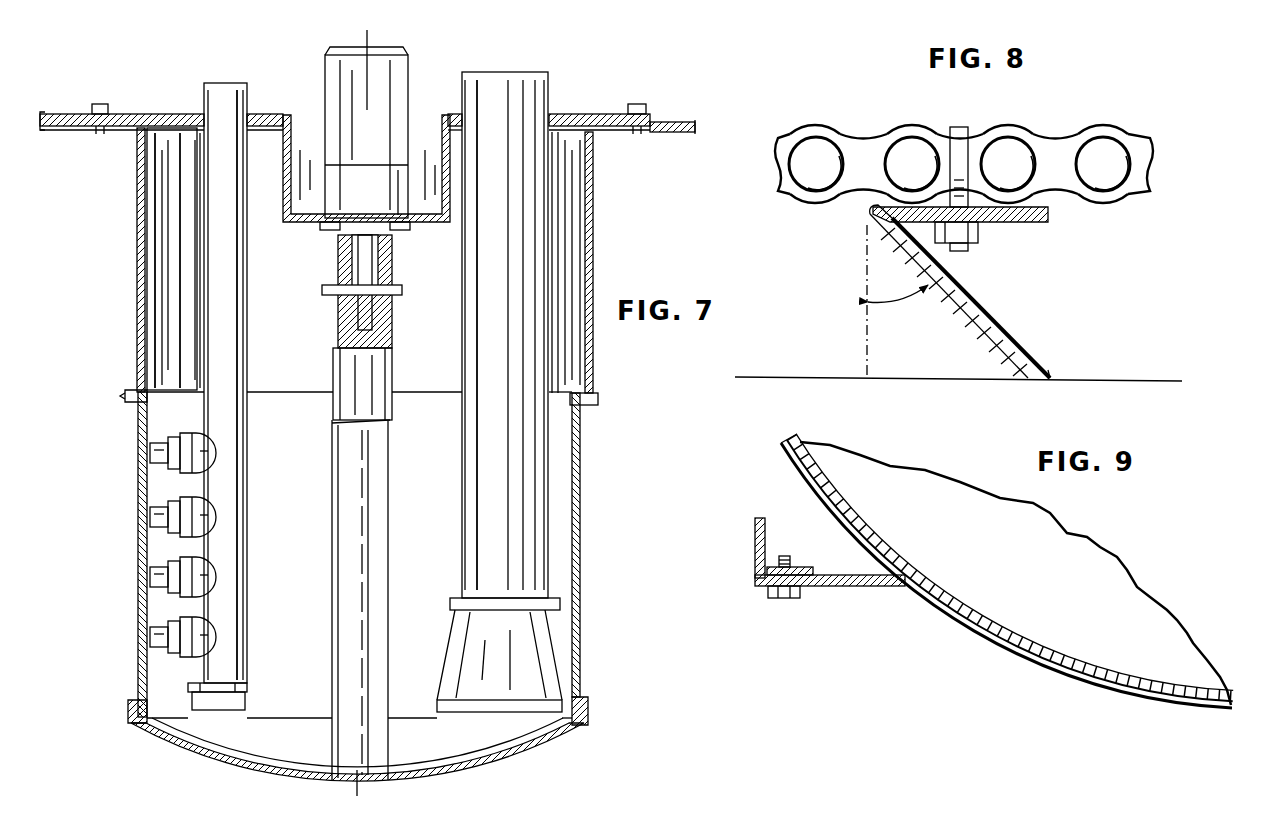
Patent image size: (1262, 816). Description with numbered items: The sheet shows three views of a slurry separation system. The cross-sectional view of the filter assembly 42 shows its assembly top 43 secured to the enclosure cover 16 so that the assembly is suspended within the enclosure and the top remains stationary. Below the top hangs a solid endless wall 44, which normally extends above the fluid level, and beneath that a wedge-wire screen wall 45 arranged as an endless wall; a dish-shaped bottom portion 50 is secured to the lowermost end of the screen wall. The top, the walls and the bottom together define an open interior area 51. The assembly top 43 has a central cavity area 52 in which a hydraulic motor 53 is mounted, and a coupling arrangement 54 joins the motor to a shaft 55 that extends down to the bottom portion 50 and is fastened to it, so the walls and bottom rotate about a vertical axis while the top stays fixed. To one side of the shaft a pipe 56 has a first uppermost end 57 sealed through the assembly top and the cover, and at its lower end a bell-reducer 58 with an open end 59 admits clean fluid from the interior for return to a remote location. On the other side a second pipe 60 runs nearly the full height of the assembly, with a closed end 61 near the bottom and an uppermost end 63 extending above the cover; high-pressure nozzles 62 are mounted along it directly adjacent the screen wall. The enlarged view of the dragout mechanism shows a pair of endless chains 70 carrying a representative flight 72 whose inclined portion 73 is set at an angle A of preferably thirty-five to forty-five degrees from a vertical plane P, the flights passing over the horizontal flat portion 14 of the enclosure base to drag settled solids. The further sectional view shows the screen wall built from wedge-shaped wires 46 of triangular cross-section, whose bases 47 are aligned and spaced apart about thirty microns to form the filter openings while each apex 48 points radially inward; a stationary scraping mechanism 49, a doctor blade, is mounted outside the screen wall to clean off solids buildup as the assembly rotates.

In FIG. 8, the horizontal flat portion 14 is at (766, 380).
In FIG. 7, the cover 16 is at (680, 122).
In FIG. 7, the filter assembly 42 is at (134, 318).
In FIG. 9, the filter assembly 42 is at (1088, 566).
In FIG. 7, the assembly top 43 is at (597, 113).
In FIG. 7, the solid endless wall 44 is at (594, 268).
In FIG. 7, the wedge-wire screen wall 45 is at (582, 512).
In FIG. 9, the wedge-wire screen wall 45 is at (1045, 668).
In FIG. 9, the wedge-shaped wires 46 is at (943, 612).
In FIG. 9, the bases of the wires 47 is at (1146, 697).
In FIG. 9, the apex of each wire 48 is at (1087, 680).
In FIG. 9, the scraping mechanism 49 is at (755, 585).
In FIG. 7, the bottom portion 50 is at (514, 760).
In FIG. 9, the bottom portion 50 is at (1065, 533).
In FIG. 7, the interior area 51 is at (292, 703).
In FIG. 7, the cavity area 52 is at (305, 125).
In FIG. 7, the hydraulic motor 53 is at (398, 75).
In FIG. 7, the coupling arrangement 54 is at (336, 263).
In FIG. 7, the shaft 55 is at (345, 522).
In FIG. 7, the pipe 56 is at (556, 292).
In FIG. 7, the first uppermost end 57 is at (551, 76).
In FIG. 7, the bell-reducer 58 is at (560, 653).
In FIG. 7, the open end 59 is at (490, 714).
In FIG. 7, the second pipe 60 is at (198, 295).
In FIG. 7, the first closed end 61 is at (222, 711).
In FIG. 7, the high-pressure nozzles 62 is at (150, 456).
In FIG. 7, the uppermost end 63 is at (206, 92).
In FIG. 8, the endless chains 70 is at (1118, 135).
In FIG. 8, the dragout flight 72 is at (1016, 338).
In FIG. 8, the inclined portion 73 is at (1030, 363).
In FIG. 8, the vertical plane P is at (866, 325).
In FIG. 8, the angle A is at (908, 302).